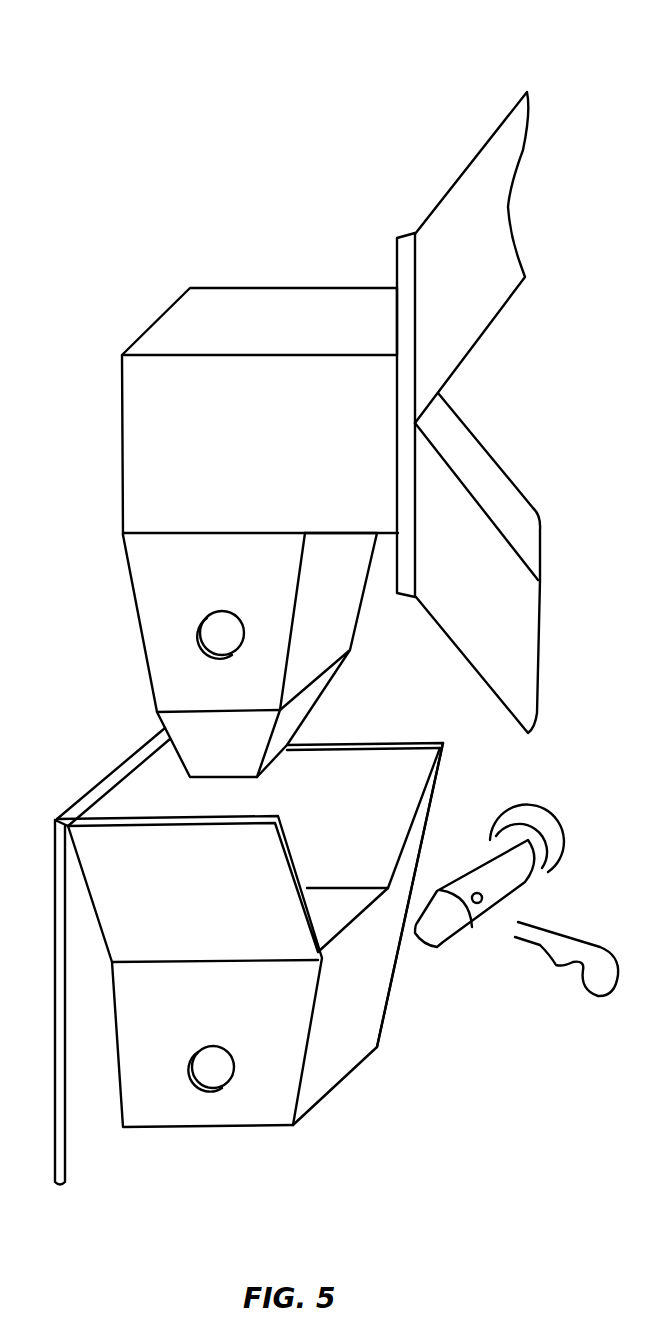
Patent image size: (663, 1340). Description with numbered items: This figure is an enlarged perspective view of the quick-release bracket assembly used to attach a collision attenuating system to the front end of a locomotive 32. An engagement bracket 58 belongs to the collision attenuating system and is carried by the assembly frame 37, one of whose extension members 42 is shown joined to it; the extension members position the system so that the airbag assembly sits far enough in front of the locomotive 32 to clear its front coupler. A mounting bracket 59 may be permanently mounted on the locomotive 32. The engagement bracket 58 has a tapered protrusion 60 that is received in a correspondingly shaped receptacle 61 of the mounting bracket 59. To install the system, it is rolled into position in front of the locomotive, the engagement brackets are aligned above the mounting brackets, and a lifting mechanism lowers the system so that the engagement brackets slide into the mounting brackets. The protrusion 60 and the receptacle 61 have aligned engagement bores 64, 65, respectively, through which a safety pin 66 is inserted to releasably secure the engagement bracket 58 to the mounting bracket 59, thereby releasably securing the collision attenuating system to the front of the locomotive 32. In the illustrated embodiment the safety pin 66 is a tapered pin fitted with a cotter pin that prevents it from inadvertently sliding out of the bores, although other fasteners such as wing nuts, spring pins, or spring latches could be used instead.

The locomotive 32 is at (78, 1145).
The assembly frame 37 is at (495, 124).
The extension member 42 is at (480, 313).
The engagement bracket 58 is at (233, 288).
The mounting bracket 59 is at (253, 927).
The tapered protrusion 60 is at (201, 655).
The receptacle 61 is at (362, 1010).
The engagement bore 64 is at (218, 611).
The engagement bore 65 is at (213, 1047).
The safety pin 66 is at (505, 882).